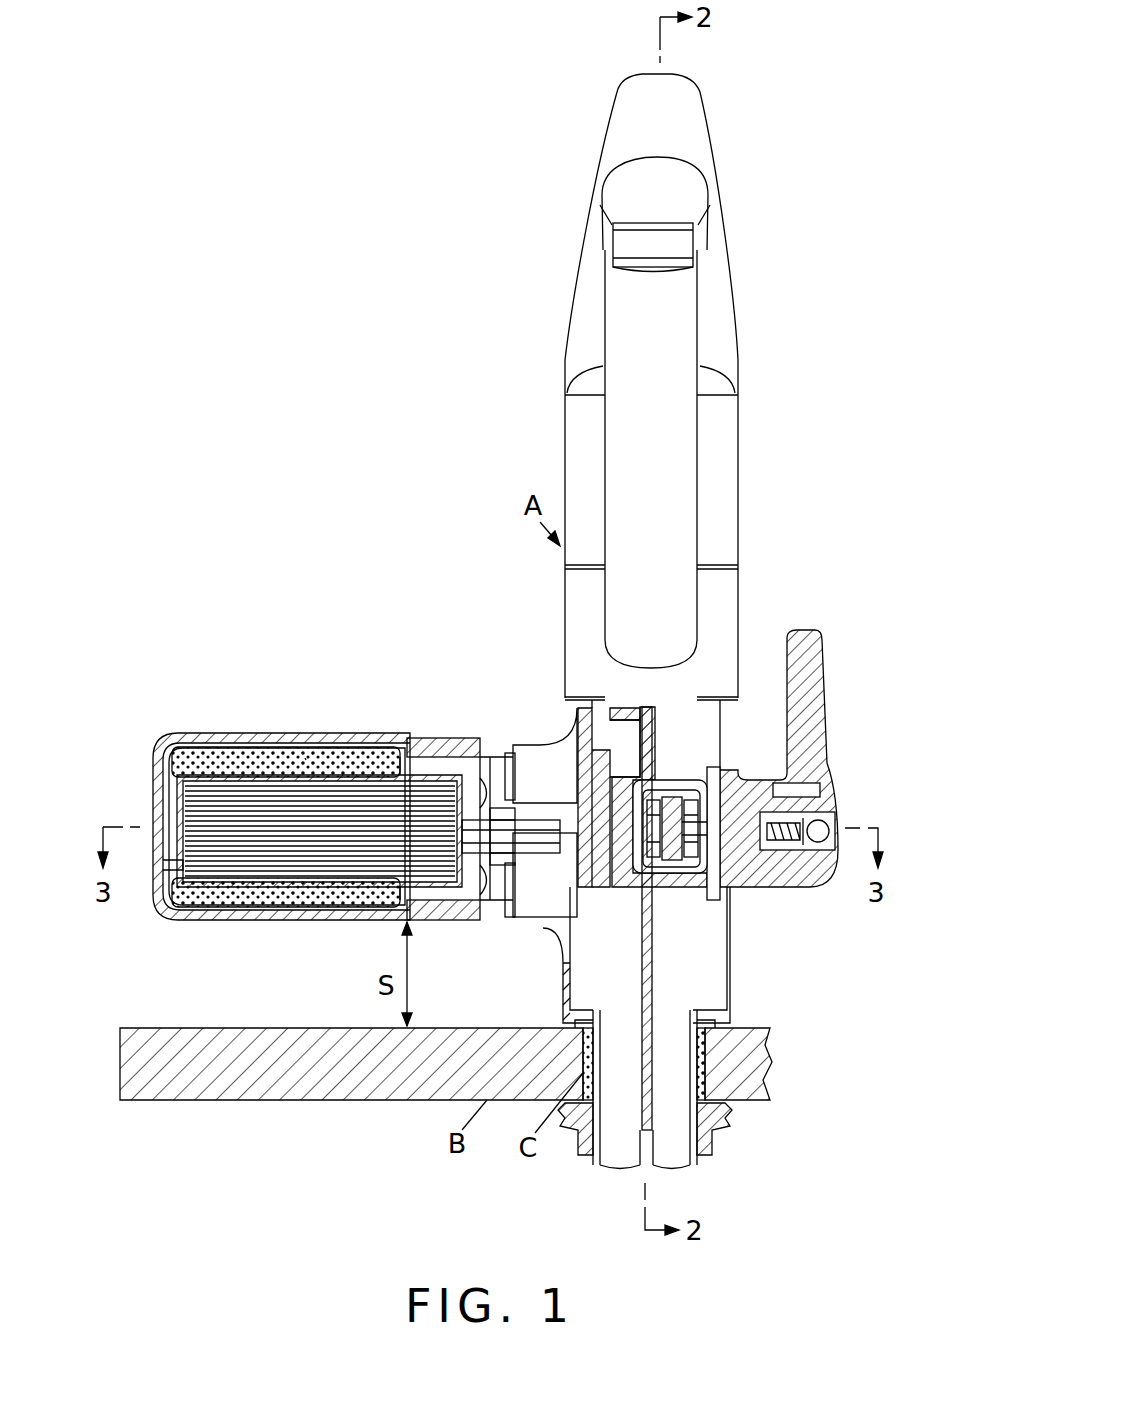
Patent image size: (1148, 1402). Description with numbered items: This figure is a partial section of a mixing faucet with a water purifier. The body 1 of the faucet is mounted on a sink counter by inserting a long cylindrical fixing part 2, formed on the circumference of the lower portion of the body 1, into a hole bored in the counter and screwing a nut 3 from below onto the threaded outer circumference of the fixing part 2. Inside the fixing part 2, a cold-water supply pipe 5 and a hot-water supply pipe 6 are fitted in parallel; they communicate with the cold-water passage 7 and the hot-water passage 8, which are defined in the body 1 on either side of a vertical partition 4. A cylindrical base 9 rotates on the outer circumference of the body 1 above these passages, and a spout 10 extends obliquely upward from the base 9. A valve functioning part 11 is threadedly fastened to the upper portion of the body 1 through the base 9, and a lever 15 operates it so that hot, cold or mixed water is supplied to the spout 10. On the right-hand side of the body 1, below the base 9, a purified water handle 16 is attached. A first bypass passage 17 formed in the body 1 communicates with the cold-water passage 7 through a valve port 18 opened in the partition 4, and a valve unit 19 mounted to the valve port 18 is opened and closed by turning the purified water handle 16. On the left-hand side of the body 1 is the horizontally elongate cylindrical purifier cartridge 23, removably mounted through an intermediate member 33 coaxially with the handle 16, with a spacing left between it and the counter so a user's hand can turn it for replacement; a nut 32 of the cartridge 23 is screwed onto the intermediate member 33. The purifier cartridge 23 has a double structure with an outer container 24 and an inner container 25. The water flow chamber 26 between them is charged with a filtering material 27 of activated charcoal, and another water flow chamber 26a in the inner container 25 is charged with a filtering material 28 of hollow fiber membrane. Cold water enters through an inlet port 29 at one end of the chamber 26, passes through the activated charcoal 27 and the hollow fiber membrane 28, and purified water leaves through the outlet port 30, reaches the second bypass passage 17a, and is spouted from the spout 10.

The body 1 is at (562, 700).
The fixing part 2 is at (697, 1073).
The nut 3 is at (707, 1140).
The vertical partition 4 is at (648, 962).
The cold-water supply pipe 5 is at (693, 1163).
The hot-water supply pipe 6 is at (600, 1163).
The cold-water passage 7 is at (708, 995).
The hot-water passage 8 is at (580, 995).
The cylindrical base 9 is at (720, 598).
The spout 10 is at (683, 465).
The valve functioning part 11 is at (585, 455).
The lever 15 is at (727, 343).
The purified water handle 16 is at (815, 712).
The first bypass passage 17 is at (645, 790).
The second bypass passage 17a is at (568, 905).
The valve port 18 is at (695, 785).
The valve unit 19 is at (677, 878).
The purifier cartridge 23 is at (256, 738).
The outer container 24 is at (352, 740).
The inner container 25 is at (262, 882).
The water flow chamber 26 is at (216, 750).
The water flow chamber 26a is at (200, 870).
The filtering material of activated charcoal 27 is at (305, 758).
The filtering material of hollow fiber membrane 28 is at (340, 865).
The inlet port 29 is at (398, 745).
The outlet port 30 is at (468, 893).
The nut 32 is at (450, 742).
The intermediate member 33 is at (500, 902).